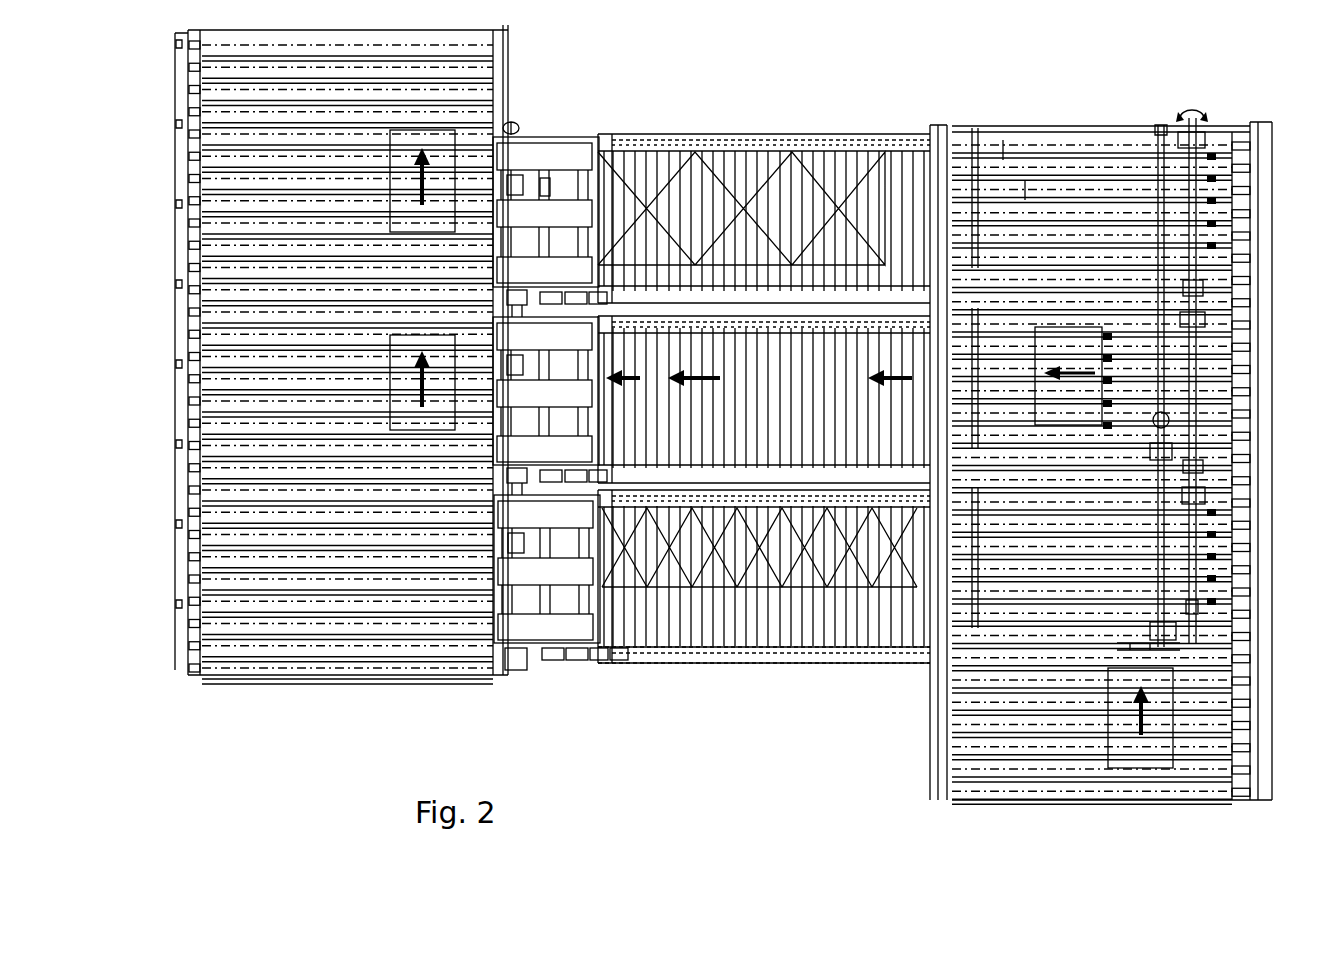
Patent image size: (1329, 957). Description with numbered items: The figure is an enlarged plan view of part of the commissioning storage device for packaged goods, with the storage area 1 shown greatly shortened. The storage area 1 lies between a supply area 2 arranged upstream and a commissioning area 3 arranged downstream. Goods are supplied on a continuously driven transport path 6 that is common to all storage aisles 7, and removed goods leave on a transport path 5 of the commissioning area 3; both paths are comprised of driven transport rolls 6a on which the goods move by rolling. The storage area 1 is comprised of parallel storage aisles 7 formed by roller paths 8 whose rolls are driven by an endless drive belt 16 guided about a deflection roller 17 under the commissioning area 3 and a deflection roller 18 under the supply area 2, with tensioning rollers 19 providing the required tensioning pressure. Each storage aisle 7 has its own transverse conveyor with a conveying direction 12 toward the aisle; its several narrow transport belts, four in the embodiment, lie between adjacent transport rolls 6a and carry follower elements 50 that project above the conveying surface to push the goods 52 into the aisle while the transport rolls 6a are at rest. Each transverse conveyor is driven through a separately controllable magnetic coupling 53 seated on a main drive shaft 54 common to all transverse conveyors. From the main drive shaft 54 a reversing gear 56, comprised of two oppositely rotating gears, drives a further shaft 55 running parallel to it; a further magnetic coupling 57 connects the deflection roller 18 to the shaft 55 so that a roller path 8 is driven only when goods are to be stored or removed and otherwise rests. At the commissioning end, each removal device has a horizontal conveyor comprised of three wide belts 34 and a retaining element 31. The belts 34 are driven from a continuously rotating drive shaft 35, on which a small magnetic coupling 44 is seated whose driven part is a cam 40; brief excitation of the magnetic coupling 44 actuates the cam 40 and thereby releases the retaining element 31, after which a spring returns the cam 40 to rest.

The storage area 1 is at (772, 418).
The supply area 2 is at (1224, 92).
The commissioning area 3 is at (819, 399).
The transport path 5 is at (365, 680).
The transport path 6 is at (1052, 125).
The transport rolls 6a is at (262, 650).
The storage aisles 7 is at (777, 668).
The roller path 8 is at (718, 630).
The conveying direction 12 is at (1090, 368).
The drive belt 16 is at (625, 654).
The deflection roller 17 is at (575, 652).
The deflection roller 18 is at (1177, 642).
The tensioning rollers 19 is at (600, 652).
The retaining element 31 is at (598, 185).
The belt 34 is at (562, 150).
The drive shaft 35 is at (520, 652).
The cam 40 is at (520, 192).
The magnetic coupling 44 is at (548, 190).
The follower elements 50 is at (1108, 335).
The goods 52 is at (1058, 318).
The magnetic coupling 53 is at (1205, 140).
The main drive shaft 54 is at (1191, 116).
The further shaft 55 is at (1160, 125).
The reversing gear 56 is at (1183, 625).
The magnetic coupling 57 is at (1148, 645).